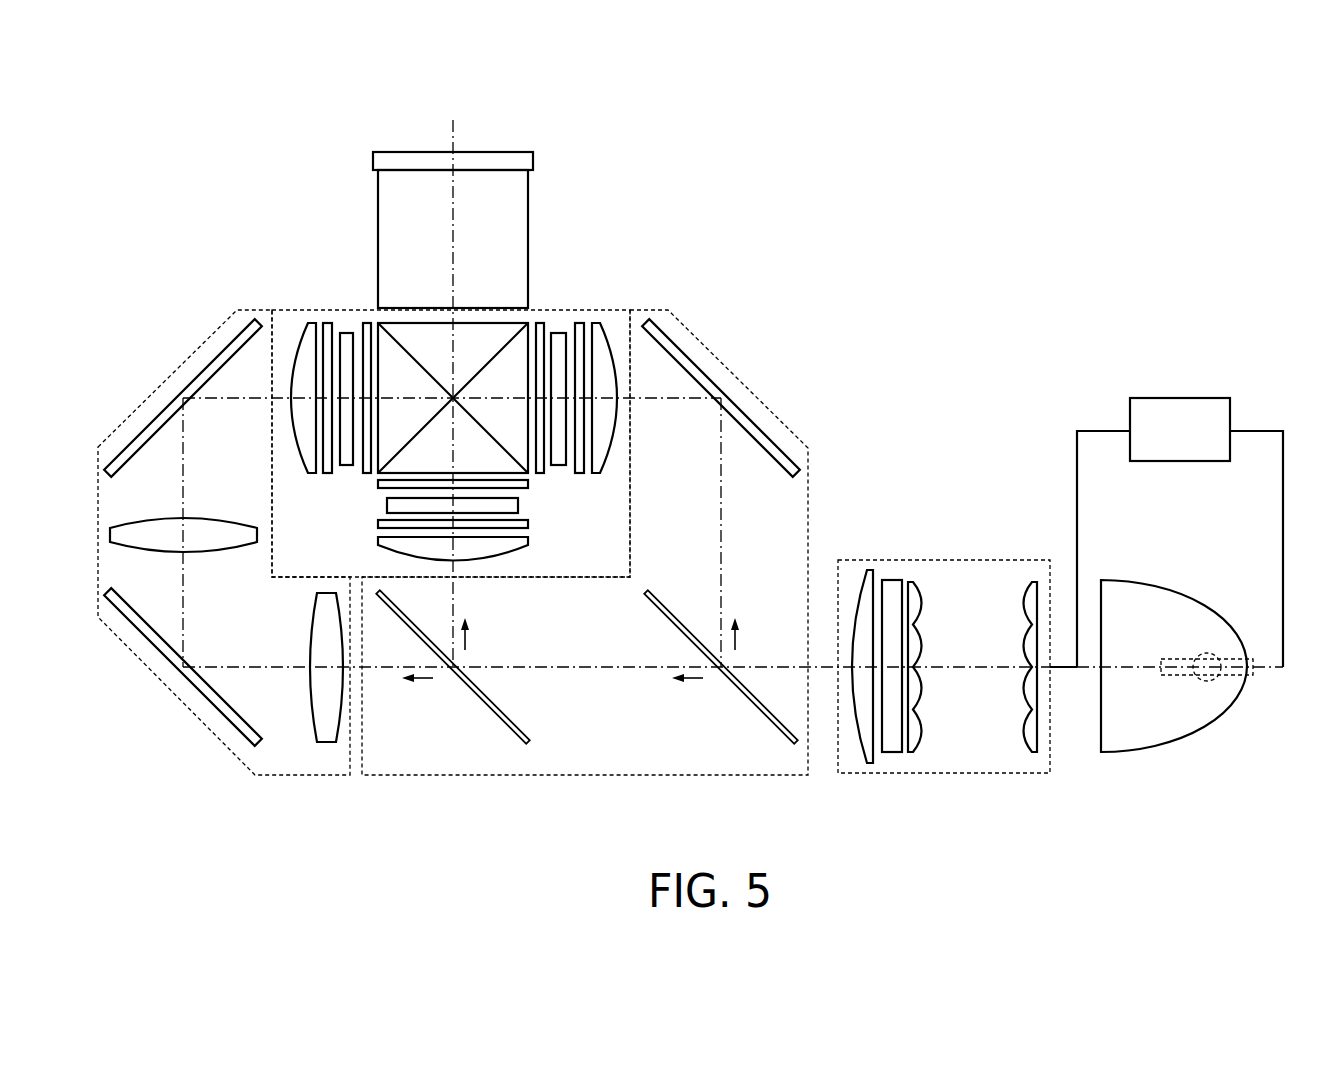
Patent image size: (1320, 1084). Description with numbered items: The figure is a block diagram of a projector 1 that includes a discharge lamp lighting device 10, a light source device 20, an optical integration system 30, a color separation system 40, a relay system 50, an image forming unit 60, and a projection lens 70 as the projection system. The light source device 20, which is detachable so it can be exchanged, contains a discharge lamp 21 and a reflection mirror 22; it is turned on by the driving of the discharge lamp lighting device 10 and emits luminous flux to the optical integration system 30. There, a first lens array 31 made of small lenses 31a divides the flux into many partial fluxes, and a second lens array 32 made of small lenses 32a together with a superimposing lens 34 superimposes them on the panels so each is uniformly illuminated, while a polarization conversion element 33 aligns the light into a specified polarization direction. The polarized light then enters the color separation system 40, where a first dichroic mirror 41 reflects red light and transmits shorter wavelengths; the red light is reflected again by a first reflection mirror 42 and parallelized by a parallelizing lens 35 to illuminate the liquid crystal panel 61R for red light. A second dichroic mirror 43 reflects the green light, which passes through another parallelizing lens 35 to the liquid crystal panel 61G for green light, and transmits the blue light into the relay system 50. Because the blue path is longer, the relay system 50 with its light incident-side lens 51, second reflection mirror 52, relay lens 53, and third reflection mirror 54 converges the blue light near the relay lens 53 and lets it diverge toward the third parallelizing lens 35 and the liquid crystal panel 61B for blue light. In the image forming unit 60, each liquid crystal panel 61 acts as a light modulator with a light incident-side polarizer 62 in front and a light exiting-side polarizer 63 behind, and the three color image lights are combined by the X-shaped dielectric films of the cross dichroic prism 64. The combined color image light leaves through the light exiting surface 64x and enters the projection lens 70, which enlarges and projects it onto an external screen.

The projector 1 is at (902, 198).
The discharge lamp lighting device 10 is at (1182, 398).
The light source device 20 is at (1180, 623).
The discharge lamp 21 is at (1207, 682).
The reflection mirror 22 is at (1147, 752).
The optical integration system 30 is at (940, 671).
The first lens array 31 is at (999, 710).
The small lenses 31a is at (1022, 692).
The second lens array 32 is at (955, 710).
The small lenses 32a is at (918, 648).
The polarization conversion element 33 is at (892, 742).
The superimposing lens 34 is at (870, 762).
The parallelizing lens 35 is at (302, 343).
The color separation system 40 is at (585, 512).
The first dichroic mirror 41 is at (757, 712).
The first reflection mirror 42 is at (770, 443).
The second dichroic mirror 43 is at (485, 712).
The relay system 50 is at (224, 509).
The light incident-side lens 51 is at (320, 700).
The second reflection mirror 52 is at (140, 630).
The relay lens 53 is at (222, 548).
The third reflection mirror 54 is at (141, 438).
The image forming unit 60 is at (465, 364).
The liquid crystal panel 61 is at (460, 368).
The liquid crystal panel for blue light 61B is at (335, 342).
The liquid crystal panel for green light 61G is at (502, 512).
The liquid crystal panel for red light 61R is at (570, 338).
The light incident-side polarizer 62 is at (326, 323).
The light exiting-side polarizer 63 is at (366, 323).
The cross dichroic prism 64 is at (428, 335).
The light exiting surface 64x is at (487, 335).
The projection lens 70 is at (482, 158).